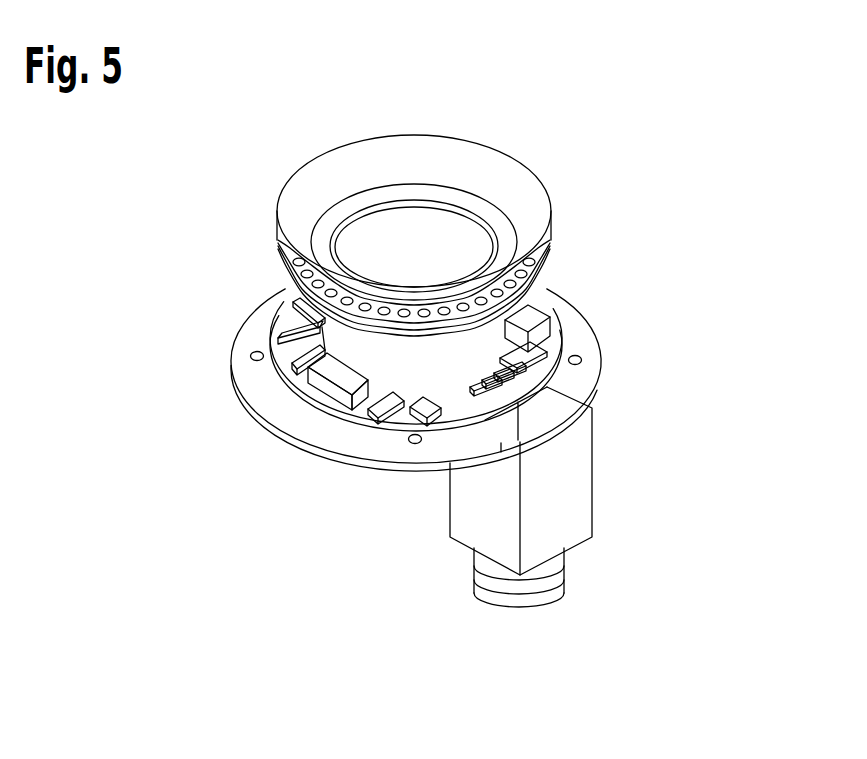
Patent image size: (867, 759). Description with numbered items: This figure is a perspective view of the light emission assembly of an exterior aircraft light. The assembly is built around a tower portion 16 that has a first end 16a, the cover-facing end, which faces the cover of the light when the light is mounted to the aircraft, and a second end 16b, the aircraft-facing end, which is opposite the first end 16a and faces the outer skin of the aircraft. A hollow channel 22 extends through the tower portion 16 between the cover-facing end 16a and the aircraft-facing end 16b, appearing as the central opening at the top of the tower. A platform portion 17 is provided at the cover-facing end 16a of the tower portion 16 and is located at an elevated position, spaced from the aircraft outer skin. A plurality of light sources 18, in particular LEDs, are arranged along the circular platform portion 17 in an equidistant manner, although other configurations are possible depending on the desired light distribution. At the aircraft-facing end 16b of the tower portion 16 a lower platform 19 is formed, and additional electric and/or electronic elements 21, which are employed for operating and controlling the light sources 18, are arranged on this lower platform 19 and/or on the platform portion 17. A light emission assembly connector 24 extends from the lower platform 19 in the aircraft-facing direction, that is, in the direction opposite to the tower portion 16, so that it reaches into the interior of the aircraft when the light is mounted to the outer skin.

The tower portion 16 is at (388, 362).
The first end 16a is at (564, 212).
The second end 16b is at (606, 339).
The platform portion 17 is at (259, 250).
The light sources 18 is at (540, 275).
The lower platform 19 is at (470, 403).
The electric and/or electronic elements 21 is at (330, 387).
The hollow channel 22 is at (434, 238).
The light emission assembly connector 24 is at (614, 444).